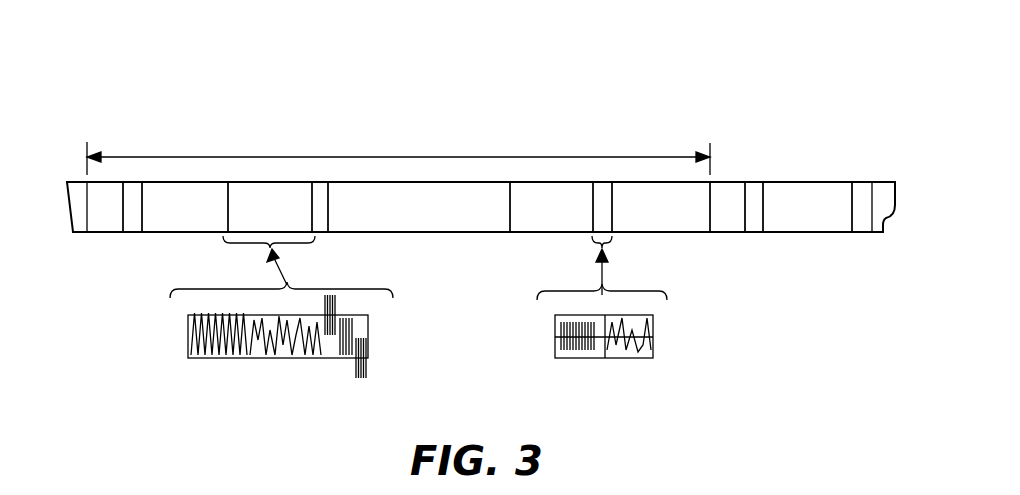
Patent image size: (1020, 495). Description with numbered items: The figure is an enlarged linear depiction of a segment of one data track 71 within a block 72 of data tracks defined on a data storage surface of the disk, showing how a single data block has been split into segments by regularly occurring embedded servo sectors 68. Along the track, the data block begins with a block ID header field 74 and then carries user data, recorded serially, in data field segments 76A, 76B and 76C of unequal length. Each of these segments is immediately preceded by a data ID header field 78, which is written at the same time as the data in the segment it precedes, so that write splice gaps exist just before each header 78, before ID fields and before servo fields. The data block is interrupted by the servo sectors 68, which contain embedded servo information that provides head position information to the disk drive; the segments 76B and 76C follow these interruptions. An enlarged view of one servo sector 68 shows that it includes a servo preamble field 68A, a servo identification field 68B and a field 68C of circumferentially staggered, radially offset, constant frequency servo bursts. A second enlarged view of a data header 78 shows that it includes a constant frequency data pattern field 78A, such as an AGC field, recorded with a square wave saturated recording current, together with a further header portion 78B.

The data track 71 is at (69, 214).
The block of data tracks 72 is at (482, 156).
The data block header field 74 is at (106, 226).
The data field segment 76A is at (193, 188).
The data field segment 76B is at (385, 192).
The data field segment 76C is at (658, 186).
The data ID header field 78 is at (131, 186).
The embedded servo sector 68 is at (260, 190).
The servo preamble field 68A is at (222, 358).
The servo identification field 68B is at (283, 358).
The servo burst field 68C is at (320, 358).
The constant frequency data pattern field 78A is at (563, 358).
The sync waveform portion 78B is at (628, 358).